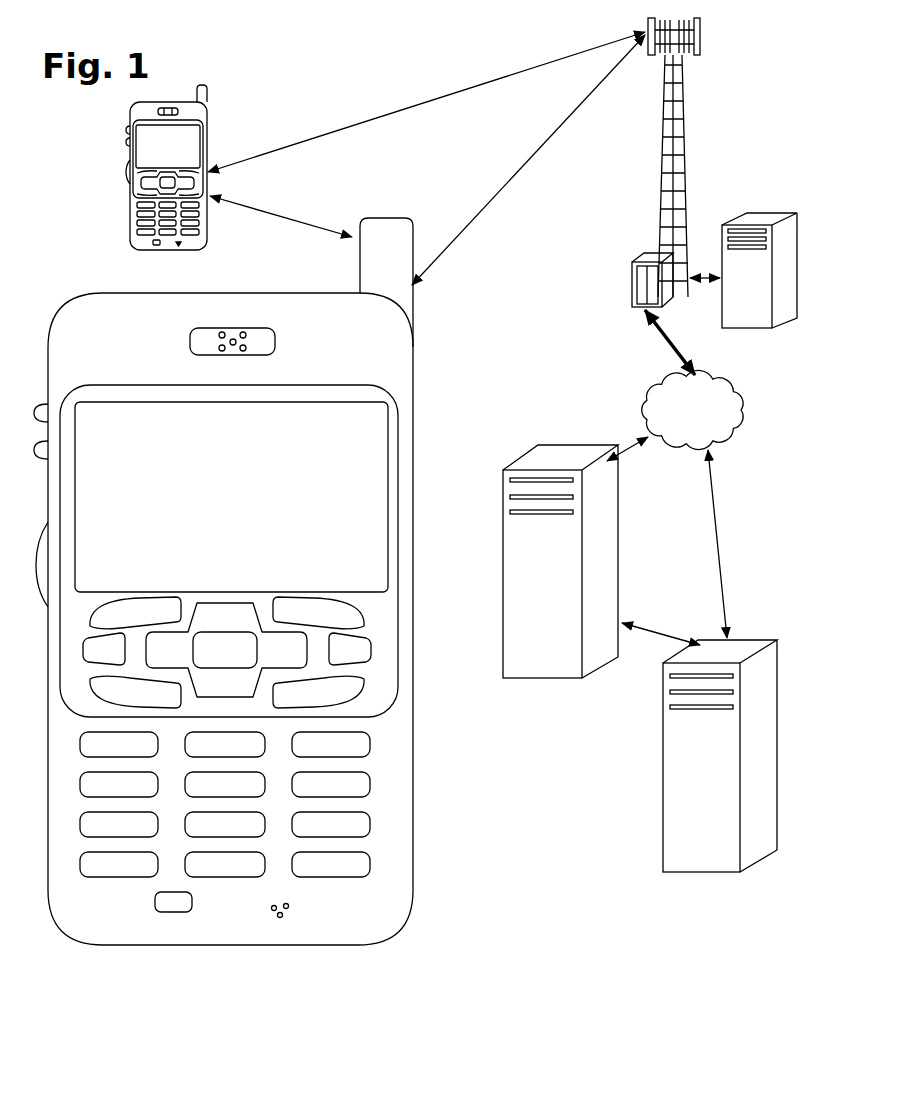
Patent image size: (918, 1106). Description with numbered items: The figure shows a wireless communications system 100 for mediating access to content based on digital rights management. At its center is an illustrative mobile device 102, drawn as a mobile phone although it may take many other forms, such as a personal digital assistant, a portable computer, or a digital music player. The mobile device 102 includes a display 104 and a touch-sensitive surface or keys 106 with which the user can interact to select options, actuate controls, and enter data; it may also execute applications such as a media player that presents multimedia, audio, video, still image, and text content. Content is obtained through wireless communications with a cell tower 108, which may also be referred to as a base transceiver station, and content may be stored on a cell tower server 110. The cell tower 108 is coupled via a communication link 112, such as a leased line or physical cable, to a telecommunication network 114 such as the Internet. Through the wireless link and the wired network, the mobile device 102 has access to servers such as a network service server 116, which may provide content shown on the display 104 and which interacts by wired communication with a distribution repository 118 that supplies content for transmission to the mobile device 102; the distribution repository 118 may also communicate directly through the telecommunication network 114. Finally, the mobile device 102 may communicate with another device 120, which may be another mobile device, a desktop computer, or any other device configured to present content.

The wireless communications system 100 is at (467, 338).
The mobile device 102 is at (100, 947).
The display 104 is at (380, 410).
The keys 106 is at (420, 597).
The cell tower 108 is at (660, 173).
The cell tower server 110 is at (752, 330).
The communication link 112 is at (662, 340).
The telecommunication network 114 is at (697, 452).
The network service server 116 is at (512, 679).
The distribution repository 118 is at (685, 873).
The another device 120 is at (213, 157).